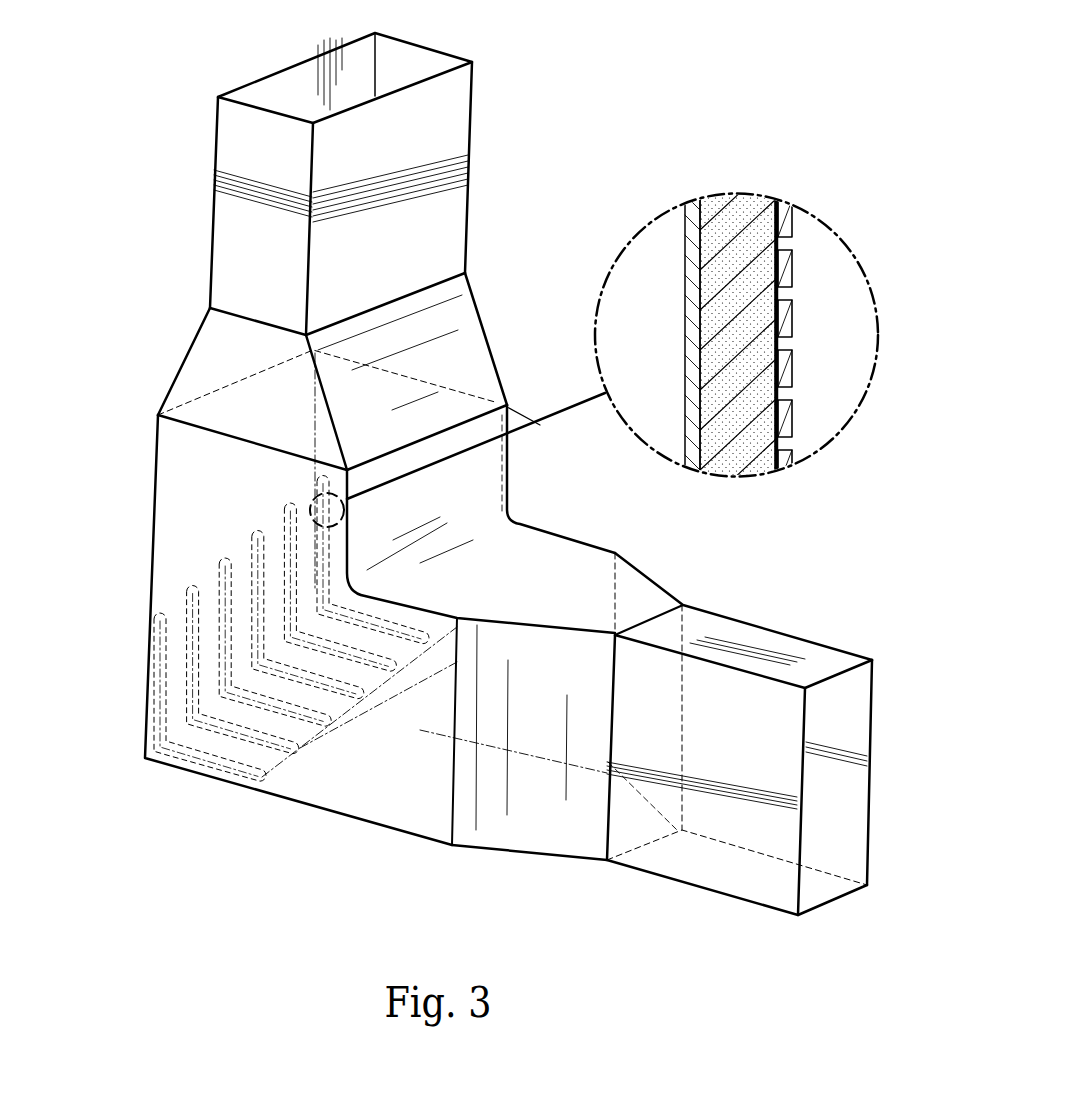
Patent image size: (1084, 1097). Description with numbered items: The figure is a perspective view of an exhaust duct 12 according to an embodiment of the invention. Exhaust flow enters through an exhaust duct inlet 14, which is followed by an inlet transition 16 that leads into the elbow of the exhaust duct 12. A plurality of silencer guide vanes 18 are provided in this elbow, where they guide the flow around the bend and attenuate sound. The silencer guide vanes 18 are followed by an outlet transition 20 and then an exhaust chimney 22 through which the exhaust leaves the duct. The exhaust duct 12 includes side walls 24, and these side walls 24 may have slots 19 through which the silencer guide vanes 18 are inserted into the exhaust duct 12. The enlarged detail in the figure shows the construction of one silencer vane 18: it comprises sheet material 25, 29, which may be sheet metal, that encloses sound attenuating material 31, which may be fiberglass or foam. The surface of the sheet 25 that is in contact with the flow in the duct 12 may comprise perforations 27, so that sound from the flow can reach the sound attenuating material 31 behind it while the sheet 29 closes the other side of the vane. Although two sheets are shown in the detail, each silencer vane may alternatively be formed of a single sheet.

The exhaust duct 12 is at (607, 98).
The exhaust duct inlet 14 is at (828, 663).
The inlet transition 16 is at (635, 585).
The silencer guide vanes 18 is at (278, 698).
The slots 19 is at (165, 668).
The outlet transition 20 is at (480, 357).
The exhaust chimney 22 is at (452, 212).
The side walls 24 is at (180, 471).
The sheet material 25 is at (790, 272).
The perforations 27 is at (787, 245).
The sheet material 29 is at (690, 237).
The sound attenuating material 31 is at (743, 217).